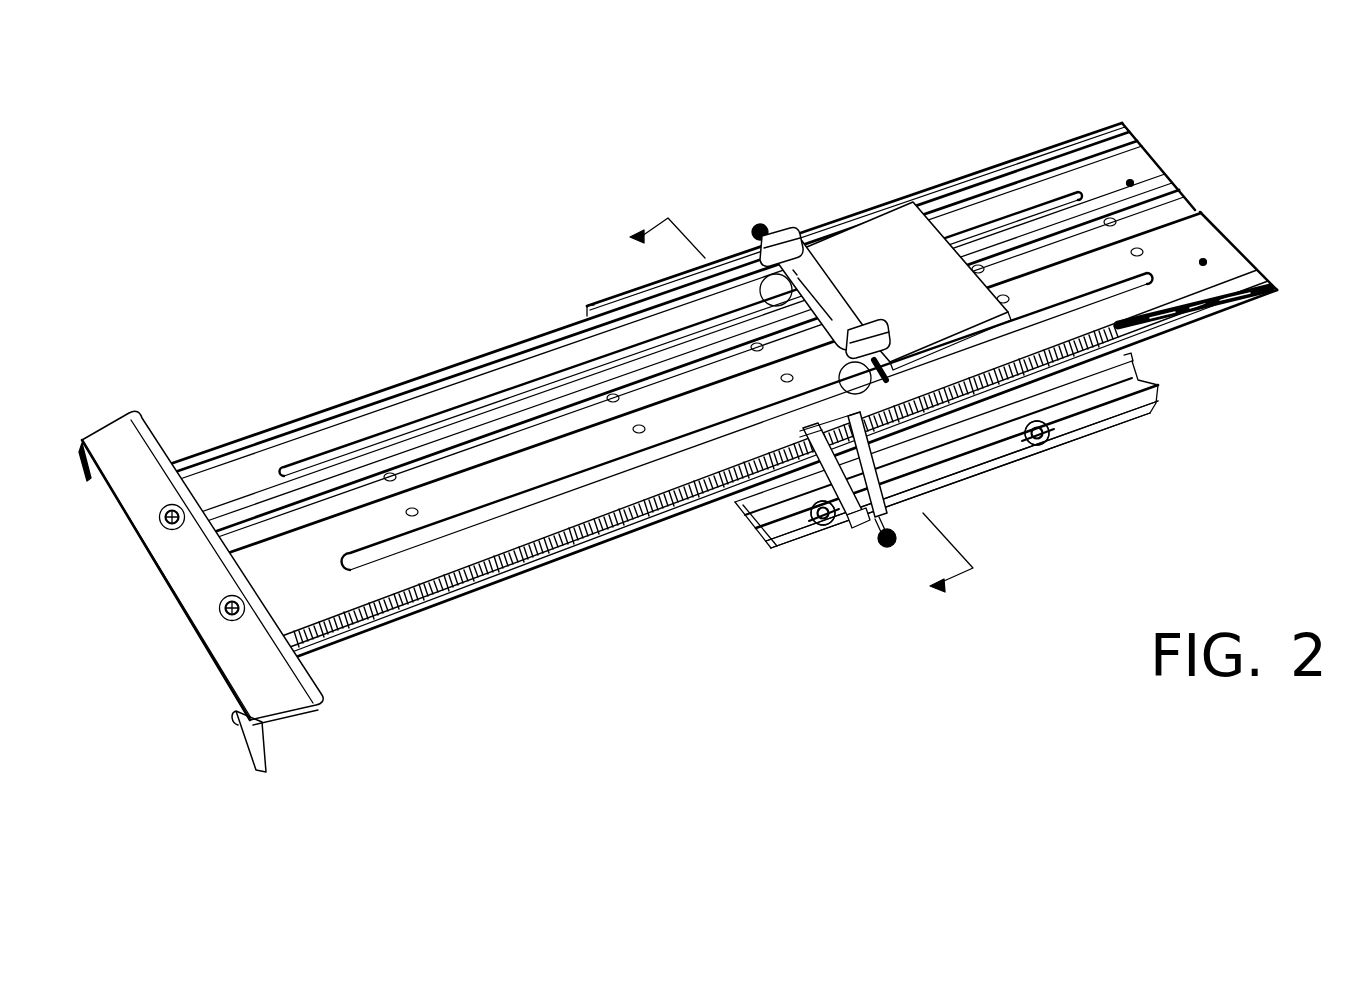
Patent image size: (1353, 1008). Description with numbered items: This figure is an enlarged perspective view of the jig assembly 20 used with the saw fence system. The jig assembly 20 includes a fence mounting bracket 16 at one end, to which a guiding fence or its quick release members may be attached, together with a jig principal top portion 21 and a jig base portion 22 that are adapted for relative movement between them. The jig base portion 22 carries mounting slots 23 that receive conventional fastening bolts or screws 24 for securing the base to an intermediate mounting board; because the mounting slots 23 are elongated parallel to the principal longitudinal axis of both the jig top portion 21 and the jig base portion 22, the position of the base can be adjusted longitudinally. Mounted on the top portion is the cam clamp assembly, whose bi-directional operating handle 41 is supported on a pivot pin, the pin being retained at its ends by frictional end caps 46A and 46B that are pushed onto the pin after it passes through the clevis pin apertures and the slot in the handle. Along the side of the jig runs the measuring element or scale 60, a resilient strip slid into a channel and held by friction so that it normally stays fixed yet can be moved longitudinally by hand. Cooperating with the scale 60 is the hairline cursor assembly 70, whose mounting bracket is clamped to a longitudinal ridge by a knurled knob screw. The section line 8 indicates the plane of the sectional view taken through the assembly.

The fence mounting bracket 16 is at (105, 450).
The jig principal top portion 21 is at (1133, 138).
The jig base portion 22 is at (1138, 420).
The jig assembly 20 is at (983, 473).
The mounting slots 23 is at (817, 525).
The fastening bolts or screws 24 is at (827, 523).
The bi-directional operating handle 41 is at (898, 297).
The frictional end cap 46A is at (766, 226).
The frictional end cap 46B is at (885, 389).
The measuring element (scale) 60 is at (422, 612).
The hairline cursor assembly 70 is at (890, 480).
The section line 8- 8 is at (789, 411).